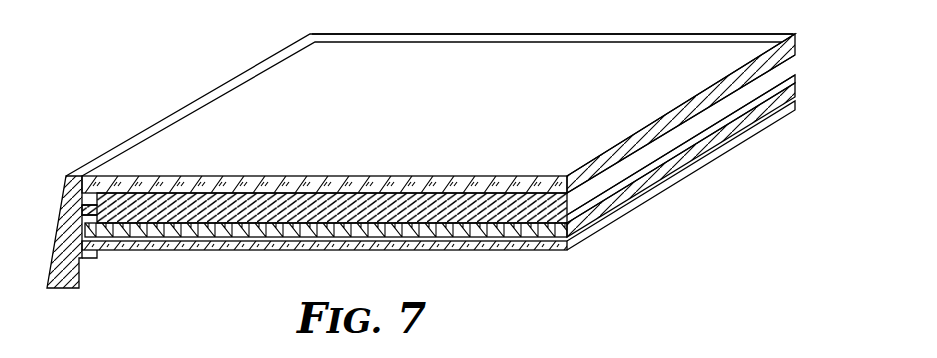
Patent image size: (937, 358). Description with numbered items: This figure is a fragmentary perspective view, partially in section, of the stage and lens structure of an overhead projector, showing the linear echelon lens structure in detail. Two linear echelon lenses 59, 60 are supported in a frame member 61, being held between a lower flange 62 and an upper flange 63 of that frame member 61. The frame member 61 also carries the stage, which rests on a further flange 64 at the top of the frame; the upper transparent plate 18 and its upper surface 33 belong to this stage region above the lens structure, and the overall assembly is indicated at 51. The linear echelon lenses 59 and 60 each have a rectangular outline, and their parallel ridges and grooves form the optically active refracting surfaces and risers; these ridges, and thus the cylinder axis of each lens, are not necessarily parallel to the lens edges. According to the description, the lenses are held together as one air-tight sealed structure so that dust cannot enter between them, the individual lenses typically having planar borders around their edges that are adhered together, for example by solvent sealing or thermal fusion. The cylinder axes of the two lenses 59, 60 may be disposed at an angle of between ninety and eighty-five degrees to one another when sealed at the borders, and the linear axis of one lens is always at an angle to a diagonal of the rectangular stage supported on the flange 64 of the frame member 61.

The transparent cover plate 18 is at (118, 175).
The top surface of cover plate 33 is at (672, 55).
The panel assembly 51 is at (114, 0).
The linear echelon lens 59 is at (799, 87).
The linear echelon lens 60 is at (799, 101).
The frame member 61 is at (57, 235).
The flange 62 is at (89, 257).
The flange 63 is at (93, 220).
The flange 64 is at (90, 196).